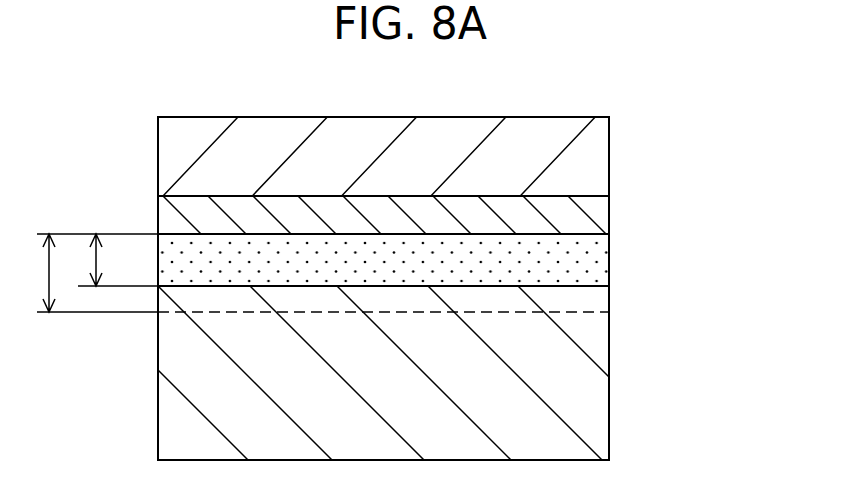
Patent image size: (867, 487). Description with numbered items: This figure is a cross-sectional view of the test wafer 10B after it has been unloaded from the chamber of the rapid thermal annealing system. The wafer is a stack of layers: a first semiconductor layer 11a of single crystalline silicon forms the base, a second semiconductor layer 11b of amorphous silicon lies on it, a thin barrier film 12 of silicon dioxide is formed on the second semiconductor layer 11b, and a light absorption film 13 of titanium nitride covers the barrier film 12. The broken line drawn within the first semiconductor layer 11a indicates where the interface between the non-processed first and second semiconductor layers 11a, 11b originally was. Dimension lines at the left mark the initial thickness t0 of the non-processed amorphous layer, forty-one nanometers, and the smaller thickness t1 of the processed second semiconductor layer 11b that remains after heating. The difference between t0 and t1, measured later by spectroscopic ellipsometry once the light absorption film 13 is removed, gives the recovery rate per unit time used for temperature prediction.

The test wafer 10B is at (732, 97).
The light absorption film 13 is at (609, 137).
The barrier film 12 is at (609, 208).
The second semiconductor layer 11b is at (609, 262).
The first semiconductor layer 11a is at (609, 397).
The initial thickness t0 is at (85, 273).
The thickness of the processed second semiconductor layer t1 is at (118, 260).